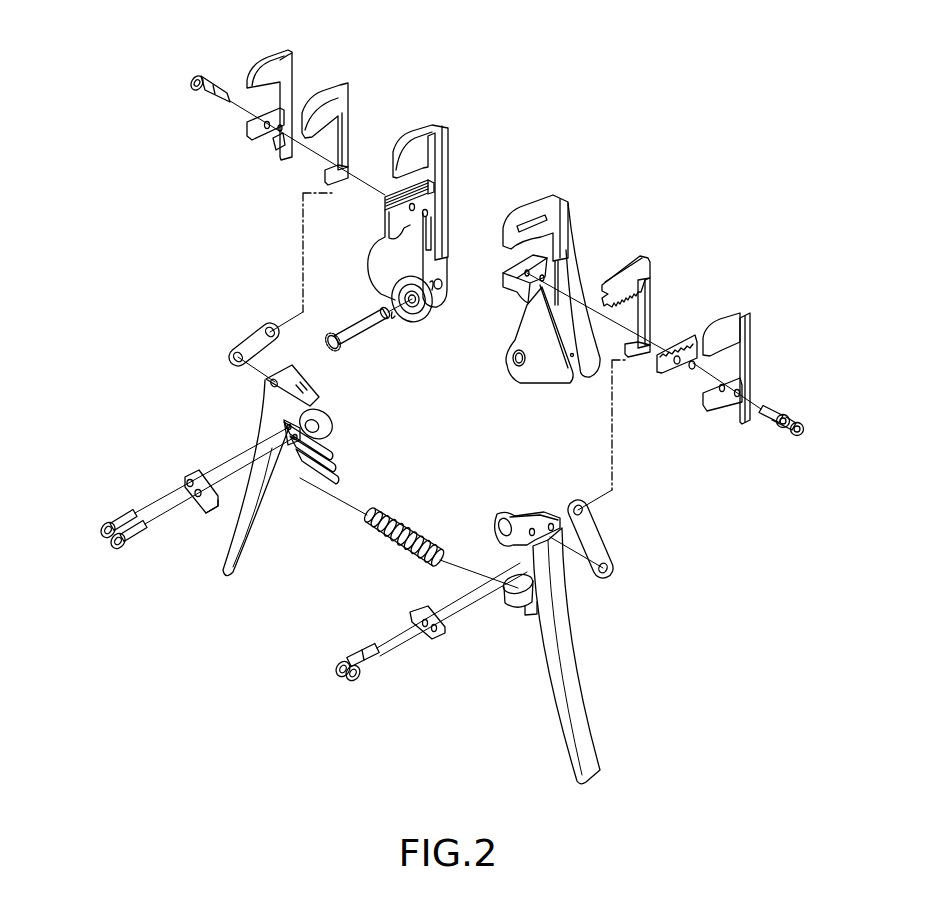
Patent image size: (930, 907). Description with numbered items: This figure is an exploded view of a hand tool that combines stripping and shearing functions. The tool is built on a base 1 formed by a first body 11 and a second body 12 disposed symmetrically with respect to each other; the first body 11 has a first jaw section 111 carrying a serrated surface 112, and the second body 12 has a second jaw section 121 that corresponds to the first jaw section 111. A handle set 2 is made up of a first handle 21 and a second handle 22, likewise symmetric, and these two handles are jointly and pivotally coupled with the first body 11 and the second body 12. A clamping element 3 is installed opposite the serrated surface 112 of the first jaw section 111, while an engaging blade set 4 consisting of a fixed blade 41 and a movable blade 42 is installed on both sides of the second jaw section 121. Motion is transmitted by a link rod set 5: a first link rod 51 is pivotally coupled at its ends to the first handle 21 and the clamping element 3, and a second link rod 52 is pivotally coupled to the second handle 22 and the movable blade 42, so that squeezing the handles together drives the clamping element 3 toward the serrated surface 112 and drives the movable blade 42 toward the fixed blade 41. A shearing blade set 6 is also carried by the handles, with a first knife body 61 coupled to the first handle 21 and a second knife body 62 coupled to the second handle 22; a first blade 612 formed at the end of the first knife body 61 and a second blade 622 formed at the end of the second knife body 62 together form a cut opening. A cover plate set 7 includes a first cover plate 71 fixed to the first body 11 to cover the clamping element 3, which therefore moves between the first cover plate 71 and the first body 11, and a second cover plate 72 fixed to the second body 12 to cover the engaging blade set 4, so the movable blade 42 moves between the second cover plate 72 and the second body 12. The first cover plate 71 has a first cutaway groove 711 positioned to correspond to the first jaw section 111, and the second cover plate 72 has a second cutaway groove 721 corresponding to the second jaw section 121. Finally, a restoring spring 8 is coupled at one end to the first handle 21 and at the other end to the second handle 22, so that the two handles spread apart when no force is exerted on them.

The base 1 is at (572, 229).
The first body 11 is at (443, 156).
The first jaw section 111 is at (387, 194).
The serrated surface 112 is at (434, 197).
The second body 12 is at (570, 285).
The second jaw section 121 is at (535, 230).
The handle set 2 is at (589, 669).
The first handle 21 is at (251, 518).
The second handle 22 is at (572, 718).
The clamping element 3 is at (327, 92).
The engaging blade set 4 is at (642, 253).
The fixed blade 41 is at (667, 375).
The movable blade 42 is at (634, 278).
The link rod set 5 is at (613, 525).
The first link rod 51 is at (250, 338).
The second link rod 52 is at (610, 552).
The shearing blade set 6 is at (180, 473).
The first knife body 61 is at (200, 511).
The first blade 612 is at (210, 506).
The second knife body 62 is at (432, 634).
The second blade 622 is at (418, 623).
The cover plate set 7 is at (242, 74).
The first cover plate 71 is at (249, 87).
The first cutaway groove 711 is at (252, 87).
The second cover plate 72 is at (748, 352).
The second cutaway groove 721 is at (723, 347).
The restoring spring 8 is at (393, 555).